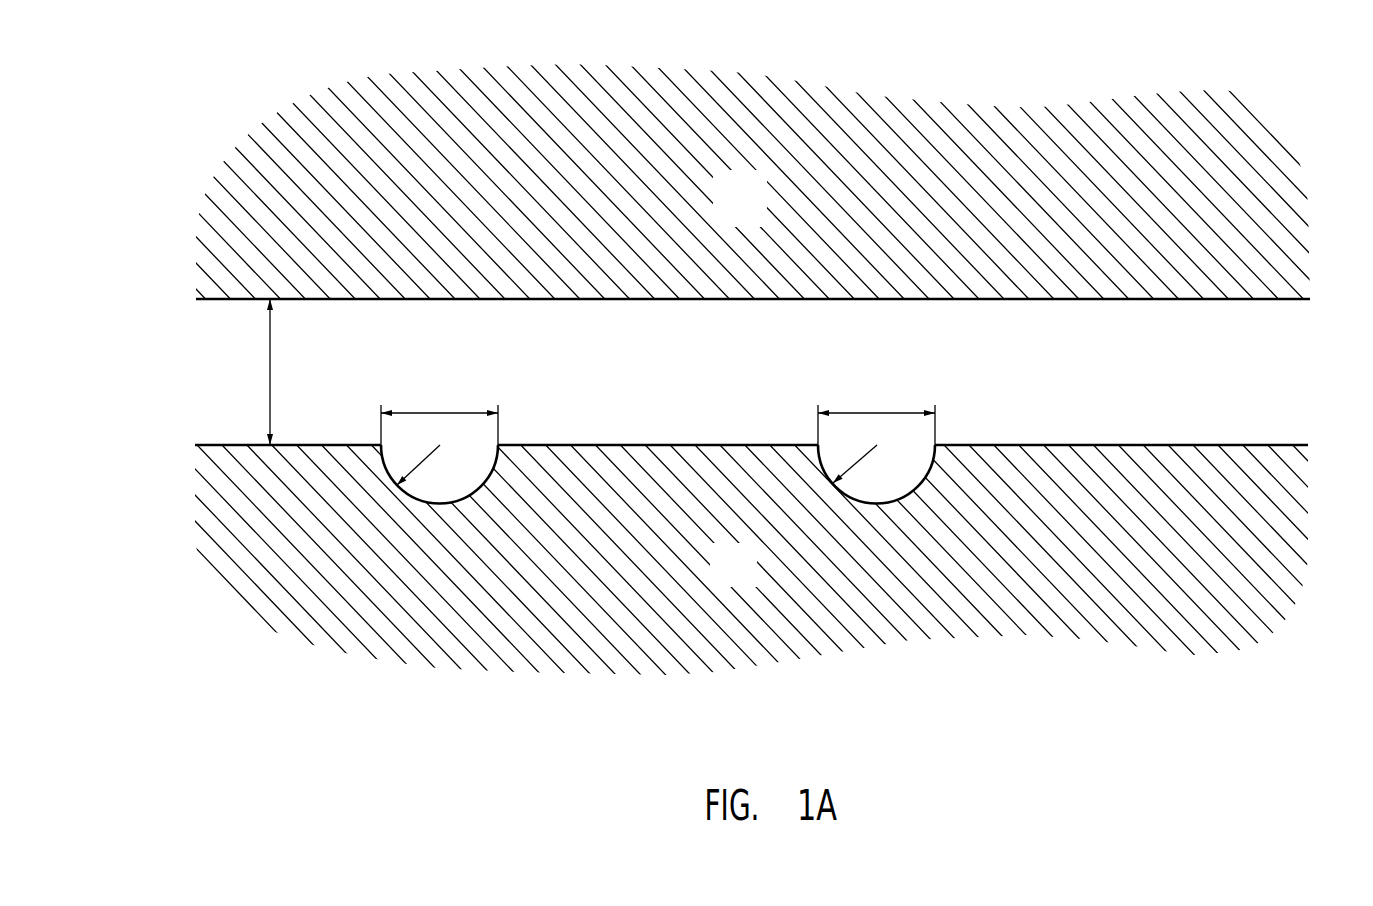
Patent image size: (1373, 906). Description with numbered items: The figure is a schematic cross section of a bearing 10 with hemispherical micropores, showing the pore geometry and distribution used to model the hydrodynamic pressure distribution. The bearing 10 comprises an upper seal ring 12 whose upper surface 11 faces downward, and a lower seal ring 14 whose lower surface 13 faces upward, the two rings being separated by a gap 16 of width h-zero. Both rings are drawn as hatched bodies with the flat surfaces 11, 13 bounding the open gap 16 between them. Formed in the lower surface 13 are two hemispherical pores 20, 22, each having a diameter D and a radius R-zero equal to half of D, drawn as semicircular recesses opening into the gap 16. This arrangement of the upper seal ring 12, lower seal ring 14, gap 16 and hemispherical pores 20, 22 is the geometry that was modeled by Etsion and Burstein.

The bearing 10 is at (197, 142).
The upper surface 11 is at (1217, 300).
The upper seal ring 12 is at (732, 206).
The lower surface 13 is at (1213, 447).
The lower seal ring 14 is at (720, 580).
The gap 16 is at (668, 374).
The hemispherical pore 20 is at (442, 490).
The hemispherical pore 22 is at (880, 493).